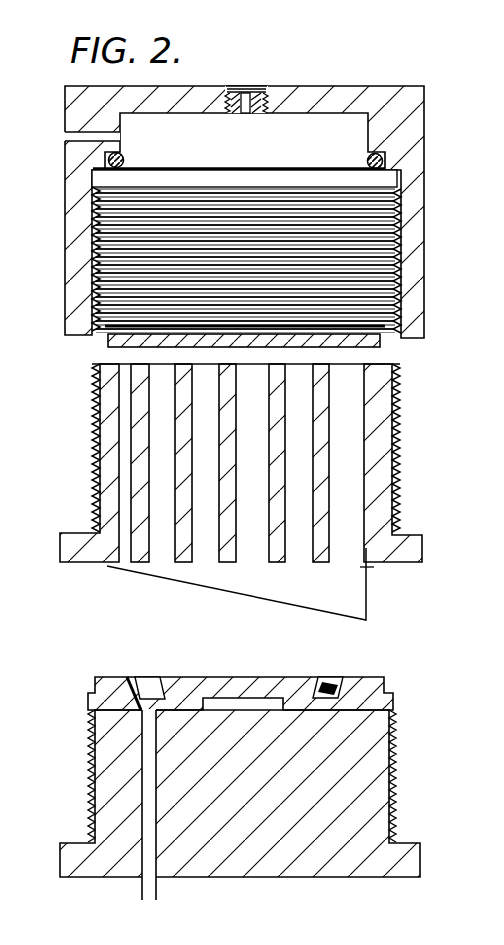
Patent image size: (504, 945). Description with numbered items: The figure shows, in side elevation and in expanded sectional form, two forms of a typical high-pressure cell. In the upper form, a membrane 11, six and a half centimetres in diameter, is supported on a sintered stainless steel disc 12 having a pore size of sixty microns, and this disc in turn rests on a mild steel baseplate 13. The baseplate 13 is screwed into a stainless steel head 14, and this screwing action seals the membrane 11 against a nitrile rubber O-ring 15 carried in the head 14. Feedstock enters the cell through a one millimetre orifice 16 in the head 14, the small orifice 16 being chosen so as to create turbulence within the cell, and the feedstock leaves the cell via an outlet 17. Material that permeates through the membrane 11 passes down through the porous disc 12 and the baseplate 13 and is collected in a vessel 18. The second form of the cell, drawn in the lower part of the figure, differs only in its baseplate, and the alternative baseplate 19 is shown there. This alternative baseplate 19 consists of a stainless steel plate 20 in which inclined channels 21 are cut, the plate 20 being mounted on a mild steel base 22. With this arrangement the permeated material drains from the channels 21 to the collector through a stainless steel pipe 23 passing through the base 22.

The membrane 11 is at (92, 302).
The sintered stainless steel disc 12 is at (385, 341).
The baseplate 13 is at (377, 441).
The head 14 is at (426, 112).
The O-ring 15 is at (385, 161).
The orifice 16 is at (246, 92).
The outlet 17 is at (95, 136).
The vessel 18 is at (368, 594).
The alternative baseplate 19 is at (365, 832).
The stainless steel plate 20 is at (395, 698).
The inclined channels 21 is at (150, 690).
The mild steel base 22 is at (372, 748).
The stainless steel pipe 23 is at (150, 783).